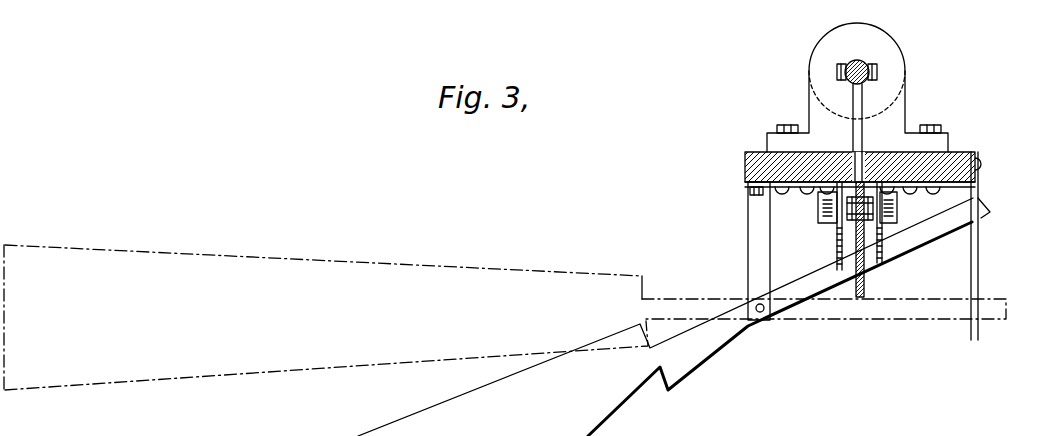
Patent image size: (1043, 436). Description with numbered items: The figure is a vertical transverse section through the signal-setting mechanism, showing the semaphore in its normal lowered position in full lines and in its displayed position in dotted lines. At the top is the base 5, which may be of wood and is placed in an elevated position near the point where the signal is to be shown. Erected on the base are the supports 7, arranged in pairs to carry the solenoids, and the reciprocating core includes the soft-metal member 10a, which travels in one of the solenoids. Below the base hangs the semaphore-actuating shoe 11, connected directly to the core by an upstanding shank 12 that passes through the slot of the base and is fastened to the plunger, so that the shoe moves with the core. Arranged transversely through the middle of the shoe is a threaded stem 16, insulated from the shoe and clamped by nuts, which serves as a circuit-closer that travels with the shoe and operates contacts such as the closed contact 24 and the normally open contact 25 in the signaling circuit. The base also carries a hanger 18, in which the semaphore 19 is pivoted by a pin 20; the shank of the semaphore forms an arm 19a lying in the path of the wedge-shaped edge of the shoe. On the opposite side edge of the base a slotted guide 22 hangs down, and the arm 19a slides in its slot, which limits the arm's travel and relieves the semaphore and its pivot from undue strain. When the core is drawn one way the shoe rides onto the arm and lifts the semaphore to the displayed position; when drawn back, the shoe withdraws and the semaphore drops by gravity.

The base 5 is at (968, 151).
The supports 7 is at (893, 117).
The soft-metal core member 10a is at (868, 62).
The semaphore-actuating shoe 11 is at (866, 285).
The upstanding shank 12 is at (853, 108).
The threaded stem 16 is at (897, 217).
The hanger 18 is at (757, 240).
The semaphore 19 is at (927, 235).
The arm 19a is at (650, 392).
The pin 20 is at (761, 314).
The guide 22 is at (980, 278).
The closed contact 24 is at (837, 246).
The normally open contact 25 is at (818, 208).